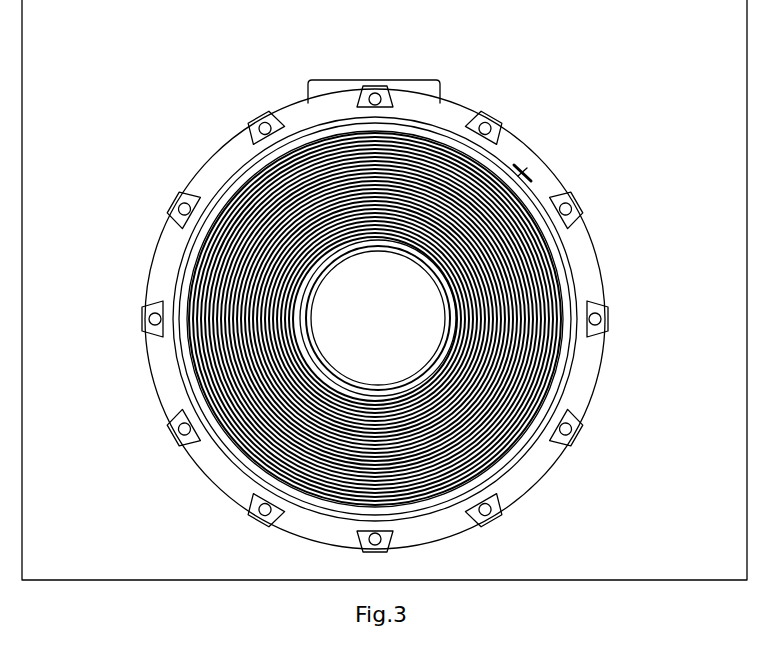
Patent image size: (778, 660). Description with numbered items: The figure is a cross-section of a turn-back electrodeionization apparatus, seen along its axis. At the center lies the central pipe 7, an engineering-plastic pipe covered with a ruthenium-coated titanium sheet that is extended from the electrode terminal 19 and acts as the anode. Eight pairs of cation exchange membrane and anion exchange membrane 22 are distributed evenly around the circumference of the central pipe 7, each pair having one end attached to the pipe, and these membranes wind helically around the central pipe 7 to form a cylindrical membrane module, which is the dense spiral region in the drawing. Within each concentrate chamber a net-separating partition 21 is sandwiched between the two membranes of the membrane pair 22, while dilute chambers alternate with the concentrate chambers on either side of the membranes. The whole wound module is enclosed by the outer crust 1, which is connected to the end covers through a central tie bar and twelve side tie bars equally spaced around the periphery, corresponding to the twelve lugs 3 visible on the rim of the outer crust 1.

The outer crust 1 is at (217, 168).
The mounting lug 3 is at (252, 125).
The central pipe 7 is at (300, 157).
The electrode terminal 19 is at (550, 240).
The net-separating partition 21 is at (432, 137).
The cation exchange membrane and anion exchange membrane pair 22 is at (485, 163).